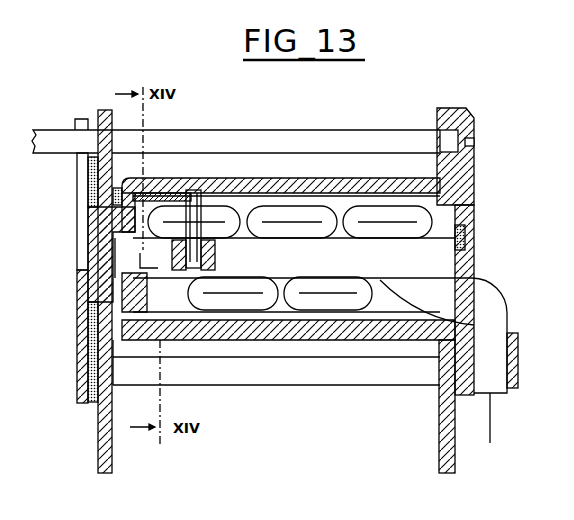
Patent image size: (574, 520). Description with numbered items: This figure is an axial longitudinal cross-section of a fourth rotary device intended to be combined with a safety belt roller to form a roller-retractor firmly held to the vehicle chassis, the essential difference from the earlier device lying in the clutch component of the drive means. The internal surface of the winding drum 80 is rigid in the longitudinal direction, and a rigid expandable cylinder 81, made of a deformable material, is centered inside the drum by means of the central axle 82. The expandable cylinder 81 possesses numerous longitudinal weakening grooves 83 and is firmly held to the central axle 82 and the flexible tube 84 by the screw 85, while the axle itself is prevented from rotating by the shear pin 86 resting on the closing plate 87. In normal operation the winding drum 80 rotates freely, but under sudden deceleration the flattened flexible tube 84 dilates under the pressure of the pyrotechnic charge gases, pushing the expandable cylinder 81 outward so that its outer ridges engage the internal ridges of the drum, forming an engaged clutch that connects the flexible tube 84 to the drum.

The winding drum 80 is at (100, 225).
The expandable cylinder 81 is at (140, 297).
The central axle 82 is at (125, 260).
The longitudinal weakening grooves 83 is at (198, 248).
The flexible tube 84 is at (352, 300).
The screw 85 is at (212, 234).
The shear pin 86 is at (462, 238).
The closing plate 87 is at (462, 400).